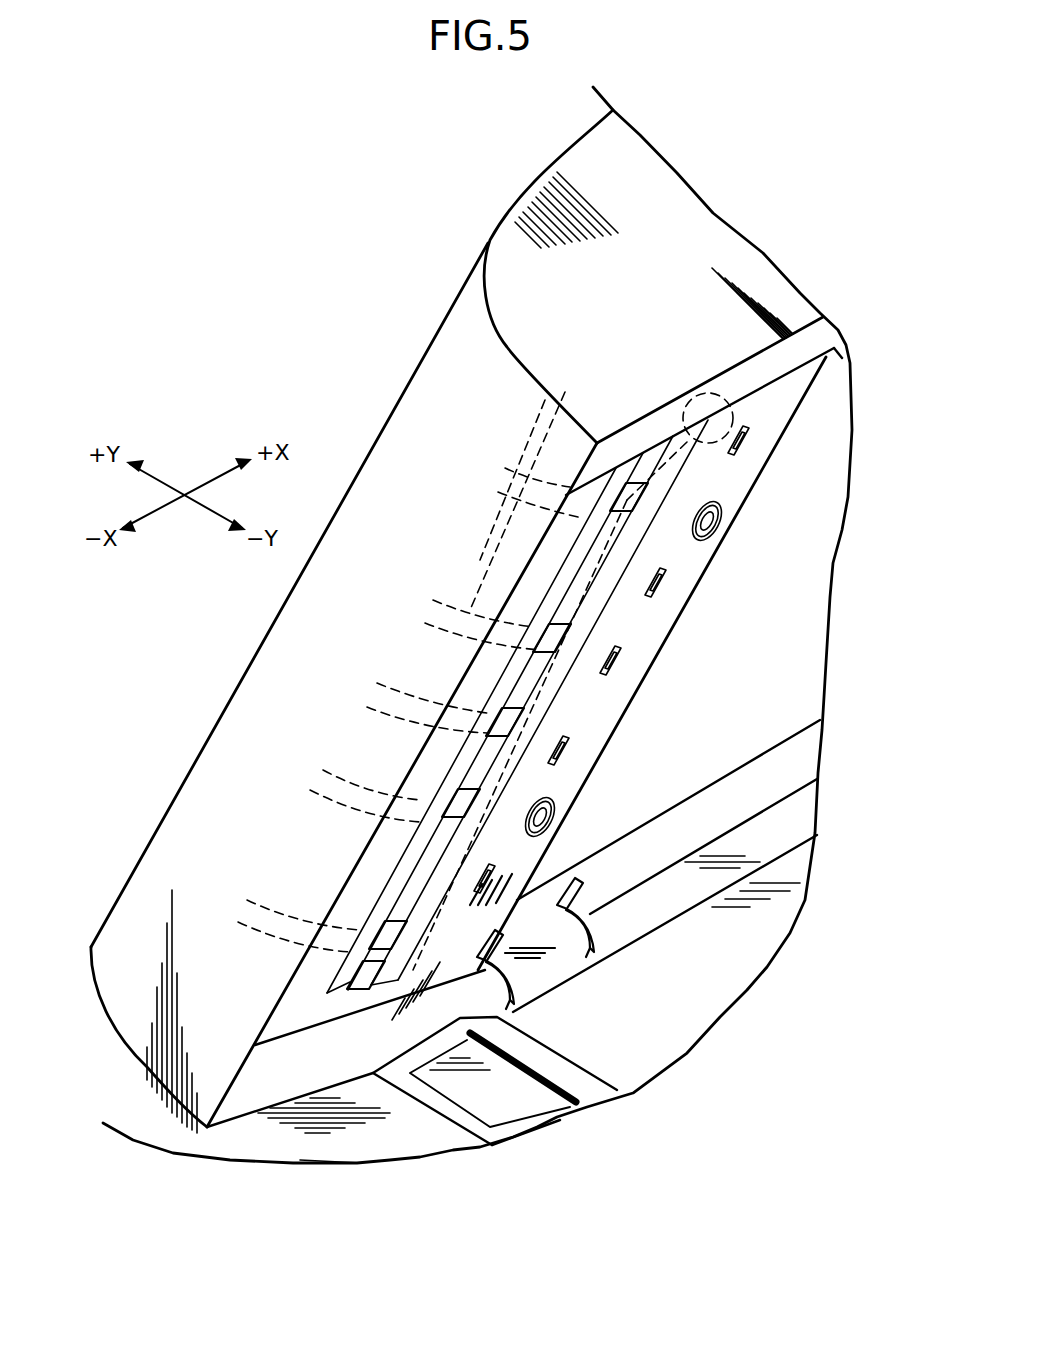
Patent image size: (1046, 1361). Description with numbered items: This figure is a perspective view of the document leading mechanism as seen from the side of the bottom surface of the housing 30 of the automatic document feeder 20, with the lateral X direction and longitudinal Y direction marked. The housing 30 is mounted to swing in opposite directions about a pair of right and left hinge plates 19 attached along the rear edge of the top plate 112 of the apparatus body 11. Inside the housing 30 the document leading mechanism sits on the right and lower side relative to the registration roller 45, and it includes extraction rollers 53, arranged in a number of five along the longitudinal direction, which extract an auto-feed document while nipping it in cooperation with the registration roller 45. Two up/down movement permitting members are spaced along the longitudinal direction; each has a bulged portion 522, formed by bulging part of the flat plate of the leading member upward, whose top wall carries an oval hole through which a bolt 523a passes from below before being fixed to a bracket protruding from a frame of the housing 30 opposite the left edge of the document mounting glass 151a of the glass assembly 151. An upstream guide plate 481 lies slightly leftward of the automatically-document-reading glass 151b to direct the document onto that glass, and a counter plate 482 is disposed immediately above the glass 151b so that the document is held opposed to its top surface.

The apparatus body 11 is at (146, 1124).
The automatic document feeder 20 is at (354, 450).
The housing 30 is at (238, 727).
The registration roller 45 is at (563, 398).
The extraction roller 53 is at (704, 394).
The upstream guide plate 481 is at (503, 693).
The counter plate 482 is at (668, 457).
The bulged portion 522 is at (706, 535).
The tab 523a is at (714, 528).
The hinge plates 19 is at (597, 953).
The base portion 151 is at (513, 946).
The document mounting glass 151a is at (705, 1012).
The automatically-document-reading glass 151b is at (516, 1088).
The top plate 112 is at (307, 1147).